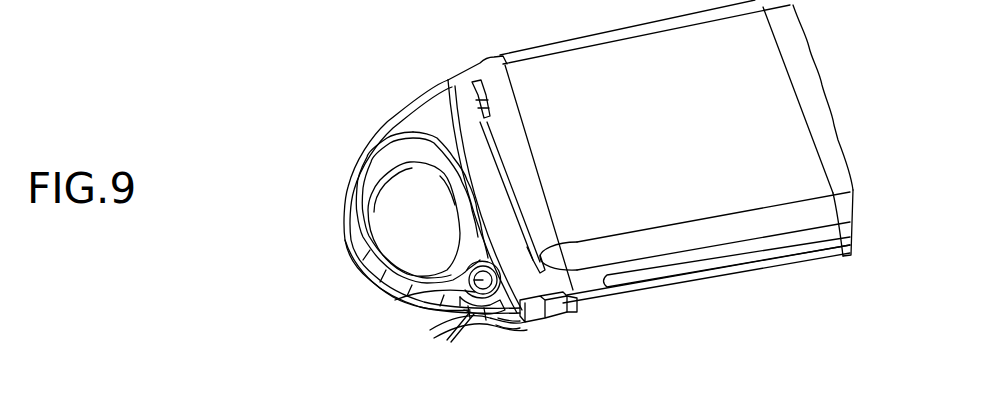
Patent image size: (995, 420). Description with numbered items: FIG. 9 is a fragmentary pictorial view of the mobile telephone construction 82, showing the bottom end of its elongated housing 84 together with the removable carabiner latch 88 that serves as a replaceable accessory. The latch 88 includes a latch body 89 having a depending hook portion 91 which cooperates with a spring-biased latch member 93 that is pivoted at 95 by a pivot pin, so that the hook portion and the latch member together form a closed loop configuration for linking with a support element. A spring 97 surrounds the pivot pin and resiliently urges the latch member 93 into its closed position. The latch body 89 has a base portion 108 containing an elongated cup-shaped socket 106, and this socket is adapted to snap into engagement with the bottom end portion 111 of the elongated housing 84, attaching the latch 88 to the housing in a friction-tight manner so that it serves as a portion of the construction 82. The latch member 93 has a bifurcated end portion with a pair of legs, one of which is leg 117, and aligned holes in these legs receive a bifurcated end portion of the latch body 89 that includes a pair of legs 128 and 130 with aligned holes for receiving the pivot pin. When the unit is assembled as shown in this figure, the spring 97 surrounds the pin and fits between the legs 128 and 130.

The mobile telephone construction 82 is at (262, 183).
The elongated housing 84 is at (688, 285).
The removable carabiner latch 88 is at (340, 273).
The latch body 89 is at (543, 320).
The depending hook portion 91 is at (340, 242).
The spring-biased latch member 93 is at (385, 288).
The pivot 95 is at (458, 282).
The spring 97 is at (455, 332).
The elongated cup-shaped socket 106 is at (560, 308).
The base portion 108 is at (528, 314).
The bottom end portion 111 is at (497, 67).
The leg 117 is at (470, 297).
The leg 128 is at (492, 328).
The leg 130 is at (502, 319).